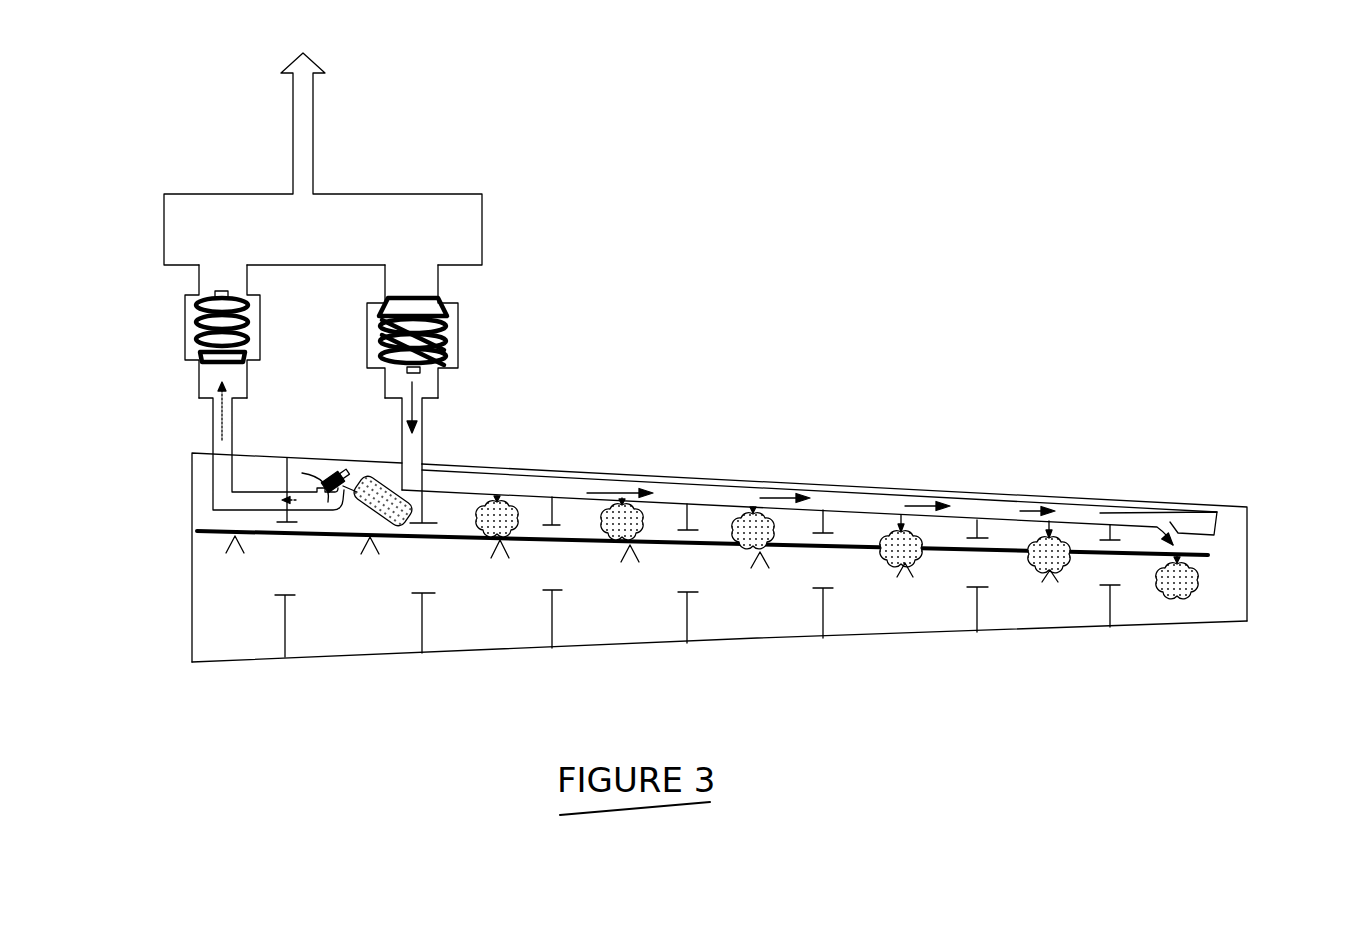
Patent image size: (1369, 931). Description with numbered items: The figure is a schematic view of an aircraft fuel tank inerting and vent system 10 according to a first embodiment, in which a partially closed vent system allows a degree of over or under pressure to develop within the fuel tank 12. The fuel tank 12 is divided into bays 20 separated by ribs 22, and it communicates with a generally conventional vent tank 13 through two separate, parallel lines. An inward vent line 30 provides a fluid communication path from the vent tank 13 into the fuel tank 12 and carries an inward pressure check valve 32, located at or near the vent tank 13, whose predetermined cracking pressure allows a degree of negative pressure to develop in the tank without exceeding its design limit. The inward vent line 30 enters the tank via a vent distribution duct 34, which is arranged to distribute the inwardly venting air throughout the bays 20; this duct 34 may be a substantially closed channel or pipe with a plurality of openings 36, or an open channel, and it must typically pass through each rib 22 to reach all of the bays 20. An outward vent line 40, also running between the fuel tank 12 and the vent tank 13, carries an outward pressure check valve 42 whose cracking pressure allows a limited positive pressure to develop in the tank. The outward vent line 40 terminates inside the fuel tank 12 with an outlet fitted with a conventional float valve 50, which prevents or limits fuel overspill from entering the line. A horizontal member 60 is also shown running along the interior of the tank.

The conveyor system 10 is at (937, 248).
The fuel tank 12 is at (1247, 558).
The vent tank 13 is at (380, 197).
The bays 20 is at (777, 700).
The rib 22 is at (978, 607).
The inward vent line 30 is at (430, 430).
The inward pressure check valve 32 is at (463, 302).
The vent distribution duct 34 is at (567, 470).
The openings 36 is at (1187, 513).
The outward vent line 40 is at (213, 433).
The outward pressure check valve 42 is at (192, 360).
The float valve 50 is at (393, 527).
The screen 60 is at (292, 537).